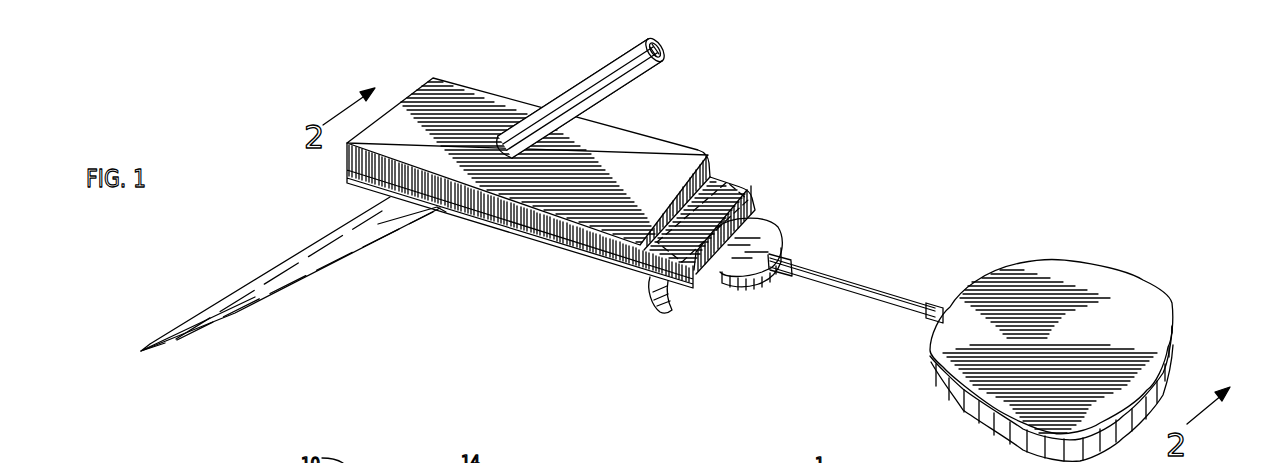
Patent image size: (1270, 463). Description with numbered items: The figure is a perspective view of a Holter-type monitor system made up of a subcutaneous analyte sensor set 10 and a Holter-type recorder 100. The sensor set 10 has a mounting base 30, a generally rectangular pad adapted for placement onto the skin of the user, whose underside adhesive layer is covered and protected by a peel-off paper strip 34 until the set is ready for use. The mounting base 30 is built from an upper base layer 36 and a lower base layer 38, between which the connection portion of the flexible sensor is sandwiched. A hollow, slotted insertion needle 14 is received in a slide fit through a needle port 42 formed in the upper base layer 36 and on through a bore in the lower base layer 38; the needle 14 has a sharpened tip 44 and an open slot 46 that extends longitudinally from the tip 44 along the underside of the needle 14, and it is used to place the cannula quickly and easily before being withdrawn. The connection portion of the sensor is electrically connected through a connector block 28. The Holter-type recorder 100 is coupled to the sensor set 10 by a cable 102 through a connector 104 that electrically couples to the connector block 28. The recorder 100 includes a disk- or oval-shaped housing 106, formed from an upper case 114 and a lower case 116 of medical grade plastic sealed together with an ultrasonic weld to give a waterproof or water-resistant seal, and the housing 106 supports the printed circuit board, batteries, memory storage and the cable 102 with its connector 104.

The subcutaneous analyte sensor set 10 is at (481, 162).
The insertion needle 14 is at (406, 193).
The connector block 28 is at (742, 178).
The mounting base 30 is at (710, 142).
The peel-off paper strip 34 is at (655, 297).
The upper base layer 36 is at (421, 96).
The lower base layer 38 is at (347, 168).
The needle port 42 is at (500, 148).
The sharpened tip 44 is at (140, 348).
The open slot 46 is at (252, 304).
The Holter-type recorder 100 is at (1030, 309).
The cable 102 is at (866, 283).
The connector 104 is at (770, 232).
The housing 106 is at (1110, 280).
The upper case 114 is at (938, 390).
The lower case 116 is at (962, 421).